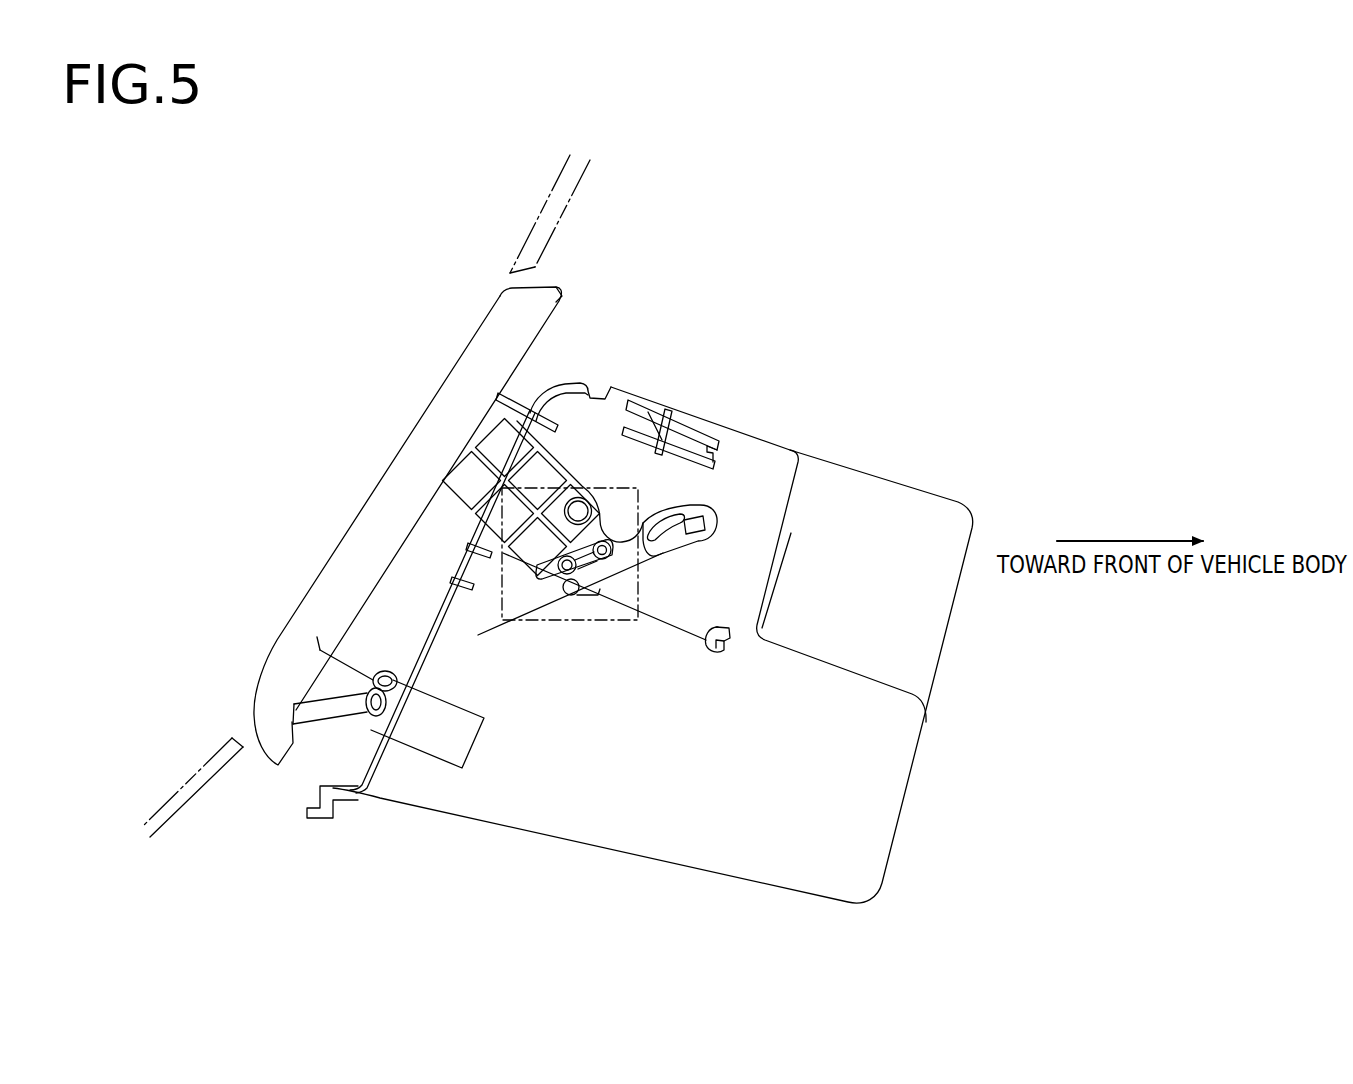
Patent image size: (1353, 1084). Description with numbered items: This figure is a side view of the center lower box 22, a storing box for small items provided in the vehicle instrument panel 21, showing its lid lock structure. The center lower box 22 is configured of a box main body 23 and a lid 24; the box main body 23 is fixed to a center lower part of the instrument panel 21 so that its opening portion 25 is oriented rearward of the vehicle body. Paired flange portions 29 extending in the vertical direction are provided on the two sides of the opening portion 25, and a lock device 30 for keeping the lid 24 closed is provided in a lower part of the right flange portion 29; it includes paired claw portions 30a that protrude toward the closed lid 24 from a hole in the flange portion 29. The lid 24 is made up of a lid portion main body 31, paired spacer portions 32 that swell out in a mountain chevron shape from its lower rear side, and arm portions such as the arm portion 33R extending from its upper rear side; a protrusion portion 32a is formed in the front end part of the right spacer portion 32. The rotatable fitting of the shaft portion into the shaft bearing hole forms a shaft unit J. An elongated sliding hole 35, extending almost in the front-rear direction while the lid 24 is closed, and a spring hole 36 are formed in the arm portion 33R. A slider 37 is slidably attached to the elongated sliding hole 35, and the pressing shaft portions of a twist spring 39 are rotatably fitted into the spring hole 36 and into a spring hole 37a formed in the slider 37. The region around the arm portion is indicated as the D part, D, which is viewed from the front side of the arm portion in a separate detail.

The vehicle instrument panel 21 is at (543, 215).
The center lower box 22 is at (1024, 271).
The box main body 23 is at (940, 477).
The lid 24 is at (326, 511).
The opening portion 25 is at (452, 556).
The flange portion 29 is at (358, 800).
The lock device 30 is at (415, 750).
The claw portion 30a is at (319, 649).
The lid portion main body 31 is at (470, 387).
The spacer portion 32 is at (334, 682).
The protrusion portion 32a is at (377, 668).
The arm portion 33R is at (720, 500).
The elongated sliding hole 35 is at (538, 596).
The spring hole 36 is at (605, 570).
The slider 37 is at (606, 552).
The spring hole 37a is at (623, 600).
The twist spring 39 is at (581, 598).
The shaft unit J is at (572, 482).
The D part D is at (637, 484).